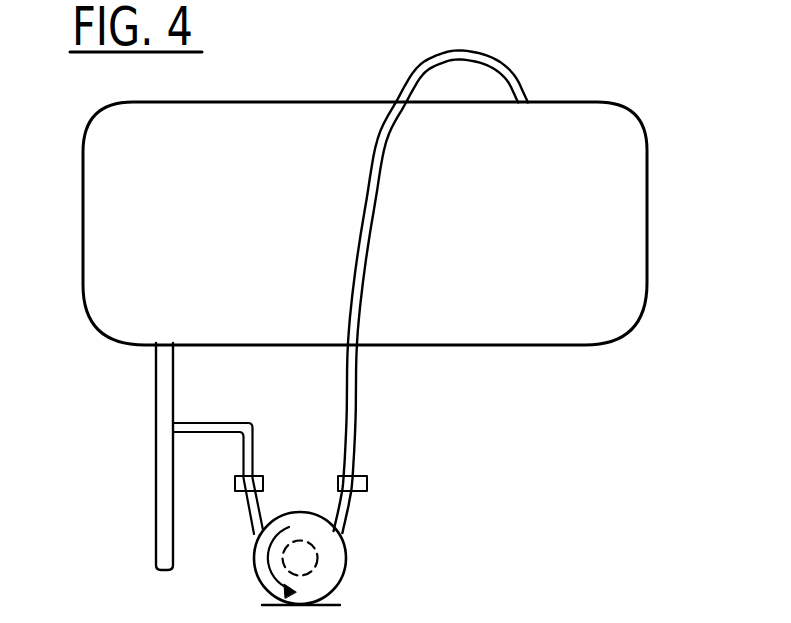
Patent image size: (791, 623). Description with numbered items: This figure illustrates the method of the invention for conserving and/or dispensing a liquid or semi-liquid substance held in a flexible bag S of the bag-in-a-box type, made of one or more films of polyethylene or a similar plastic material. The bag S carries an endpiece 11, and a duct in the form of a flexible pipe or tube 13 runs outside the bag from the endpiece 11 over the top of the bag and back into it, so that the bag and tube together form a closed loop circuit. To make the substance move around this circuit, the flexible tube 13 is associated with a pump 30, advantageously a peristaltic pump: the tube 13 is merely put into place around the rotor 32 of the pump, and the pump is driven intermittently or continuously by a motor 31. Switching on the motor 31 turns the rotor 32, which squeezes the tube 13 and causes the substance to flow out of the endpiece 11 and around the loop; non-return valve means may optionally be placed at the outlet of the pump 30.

The flexible bag S is at (647, 143).
The endpiece 11 is at (158, 394).
The flexible pipe or tube 13 is at (423, 80).
The pump 30 is at (238, 531).
The motor 31 is at (310, 567).
The rotor 32 is at (328, 565).